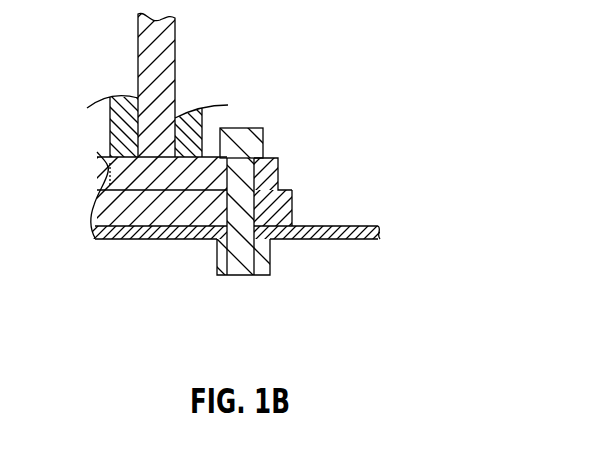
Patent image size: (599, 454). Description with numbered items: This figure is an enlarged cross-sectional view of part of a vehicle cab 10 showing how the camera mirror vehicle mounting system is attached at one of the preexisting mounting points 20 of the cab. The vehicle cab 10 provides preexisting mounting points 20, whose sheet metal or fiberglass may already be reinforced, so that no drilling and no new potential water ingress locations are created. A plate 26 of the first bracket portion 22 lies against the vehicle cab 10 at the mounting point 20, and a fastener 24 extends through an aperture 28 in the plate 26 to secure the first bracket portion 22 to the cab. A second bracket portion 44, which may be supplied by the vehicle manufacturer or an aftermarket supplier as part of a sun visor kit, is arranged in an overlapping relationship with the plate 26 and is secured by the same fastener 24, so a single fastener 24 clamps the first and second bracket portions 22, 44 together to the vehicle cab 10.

The vehicle cab 10 is at (349, 220).
The preexisting mounting points 20 is at (235, 242).
The first bracket portion 22 is at (195, 118).
The fasteners 24 is at (250, 138).
The plates 26 is at (290, 213).
The apertures 28 is at (250, 197).
The second bracket portion 44 is at (178, 30).